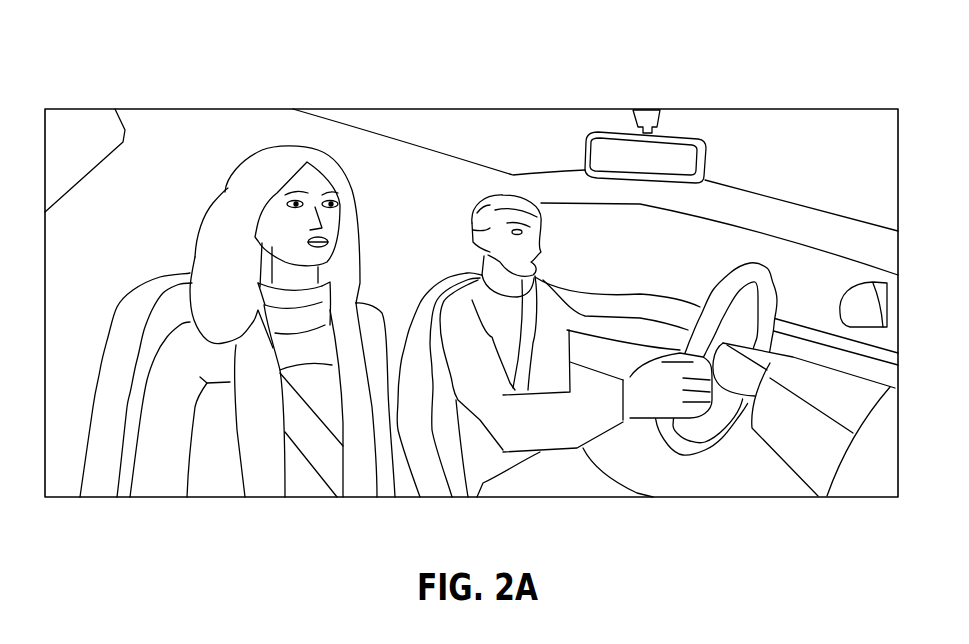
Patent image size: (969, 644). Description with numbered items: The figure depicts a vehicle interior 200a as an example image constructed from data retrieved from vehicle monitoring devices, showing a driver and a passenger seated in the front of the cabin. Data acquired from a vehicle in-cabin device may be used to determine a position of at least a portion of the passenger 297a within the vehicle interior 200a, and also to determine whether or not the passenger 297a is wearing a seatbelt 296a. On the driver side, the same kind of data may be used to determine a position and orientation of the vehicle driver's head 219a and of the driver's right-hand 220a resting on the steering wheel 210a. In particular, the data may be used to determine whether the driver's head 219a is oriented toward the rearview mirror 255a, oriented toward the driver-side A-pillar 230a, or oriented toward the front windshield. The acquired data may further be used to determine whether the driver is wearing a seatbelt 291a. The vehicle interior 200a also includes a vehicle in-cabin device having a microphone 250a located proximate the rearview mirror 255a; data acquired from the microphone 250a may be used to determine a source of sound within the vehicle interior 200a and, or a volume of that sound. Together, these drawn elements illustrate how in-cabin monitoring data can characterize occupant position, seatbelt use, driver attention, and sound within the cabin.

The vehicle interior 200a is at (134, 64).
The steering wheel 210a is at (758, 273).
The vehicle driver's head 219a is at (513, 215).
The right-hand 220a is at (675, 392).
The driver-side A-pillar 230a is at (825, 235).
The microphone 250a is at (648, 116).
The rearview mirror 255a is at (687, 158).
The seatbelt 291a is at (545, 315).
The seatbelt 296a is at (312, 443).
The passenger 297a is at (167, 443).